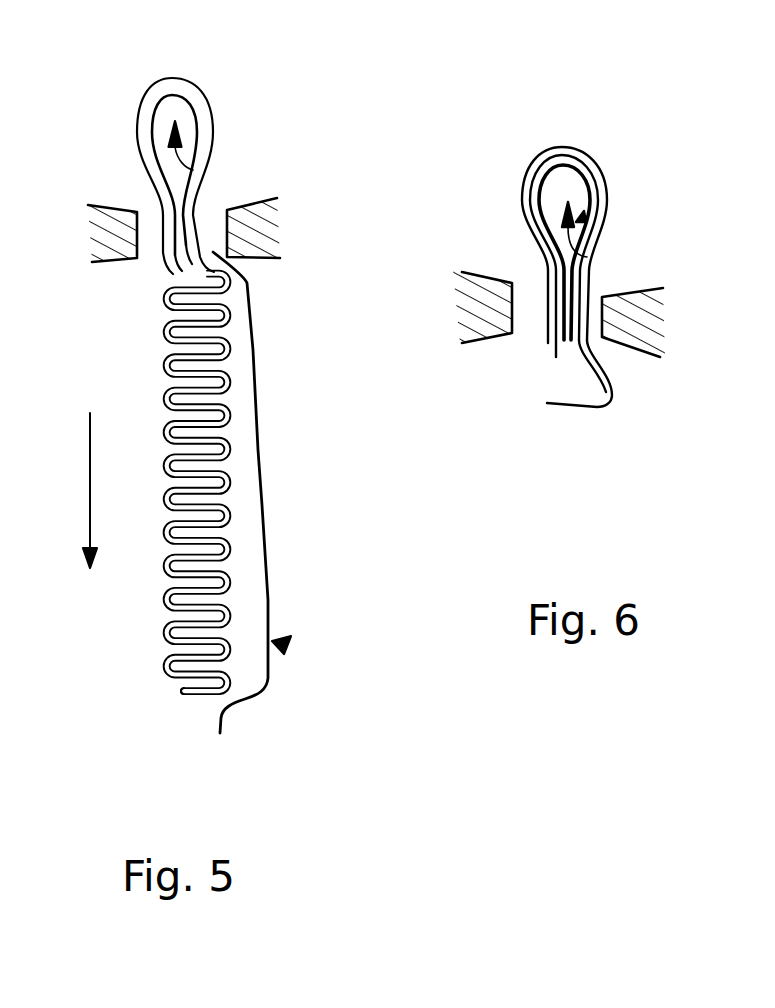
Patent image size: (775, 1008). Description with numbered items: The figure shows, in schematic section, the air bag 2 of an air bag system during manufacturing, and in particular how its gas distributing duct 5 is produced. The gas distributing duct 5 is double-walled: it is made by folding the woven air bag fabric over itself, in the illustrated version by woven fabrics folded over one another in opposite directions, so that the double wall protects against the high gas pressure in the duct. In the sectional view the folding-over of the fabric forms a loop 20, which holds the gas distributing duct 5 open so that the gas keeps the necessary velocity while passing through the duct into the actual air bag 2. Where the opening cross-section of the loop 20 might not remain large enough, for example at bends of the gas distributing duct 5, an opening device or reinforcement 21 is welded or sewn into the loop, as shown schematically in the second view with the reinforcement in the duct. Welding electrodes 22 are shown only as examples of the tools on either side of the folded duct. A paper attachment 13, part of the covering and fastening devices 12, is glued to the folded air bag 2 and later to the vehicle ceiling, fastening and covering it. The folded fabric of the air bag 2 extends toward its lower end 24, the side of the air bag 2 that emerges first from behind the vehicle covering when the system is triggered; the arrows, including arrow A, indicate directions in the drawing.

In FIG. 5, the air bag 2 is at (170, 546).
In FIG. 5, the gas distributing duct 5 is at (193, 170).
In FIG. 6, the gas distributing duct 5 is at (587, 257).
In FIG. 5, the covering and fastening devices 12 is at (284, 651).
In FIG. 5, the paper attachment 13 is at (263, 507).
In FIG. 5, the loop 20 is at (205, 110).
In FIG. 6, the loop 20 is at (553, 148).
In FIG. 6, the reinforcement 21 is at (545, 195).
In FIG. 5, the welding electrodes 22 is at (100, 247).
In FIG. 6, the welding electrodes 22 is at (462, 343).
In FIG. 5, the lower end 24 is at (193, 690).
In FIG. 5, the direction of movement A is at (92, 488).